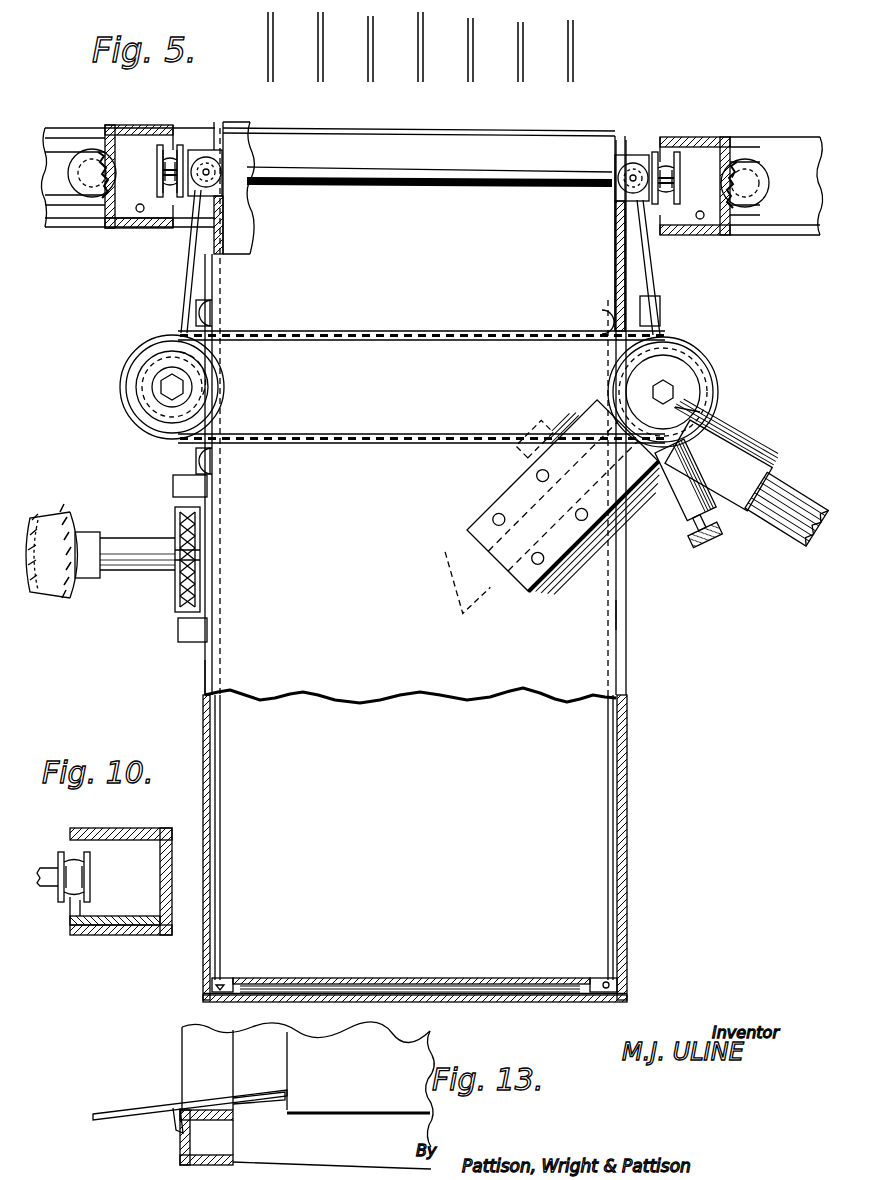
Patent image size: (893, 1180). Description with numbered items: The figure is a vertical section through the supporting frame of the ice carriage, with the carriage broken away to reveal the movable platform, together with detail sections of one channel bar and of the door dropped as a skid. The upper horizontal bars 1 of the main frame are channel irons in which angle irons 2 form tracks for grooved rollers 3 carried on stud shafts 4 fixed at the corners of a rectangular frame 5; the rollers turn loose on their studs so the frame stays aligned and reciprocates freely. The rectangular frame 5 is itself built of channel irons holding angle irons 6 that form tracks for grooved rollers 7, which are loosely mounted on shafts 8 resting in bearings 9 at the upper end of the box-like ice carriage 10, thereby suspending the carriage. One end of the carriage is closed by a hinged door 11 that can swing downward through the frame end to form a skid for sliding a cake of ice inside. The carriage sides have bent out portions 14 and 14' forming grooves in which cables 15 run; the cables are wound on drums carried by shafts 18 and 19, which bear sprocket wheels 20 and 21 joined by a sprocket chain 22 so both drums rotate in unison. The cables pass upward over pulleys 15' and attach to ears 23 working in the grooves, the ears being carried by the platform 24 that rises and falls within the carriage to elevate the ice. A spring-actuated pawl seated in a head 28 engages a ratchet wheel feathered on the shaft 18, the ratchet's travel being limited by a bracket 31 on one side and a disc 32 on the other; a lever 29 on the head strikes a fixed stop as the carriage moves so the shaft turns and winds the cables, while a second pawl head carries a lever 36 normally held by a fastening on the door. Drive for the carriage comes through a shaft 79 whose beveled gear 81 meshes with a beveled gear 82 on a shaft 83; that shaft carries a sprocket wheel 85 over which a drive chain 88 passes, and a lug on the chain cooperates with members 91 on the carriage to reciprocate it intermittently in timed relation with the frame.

In FIG. 5, the upper horizontal bars 1 is at (56, 232).
In FIG. 10, the upper horizontal bars 1 is at (115, 934).
In FIG. 13, the upper horizontal bars 1 is at (180, 1152).
In FIG. 5, the angle irons 2 is at (75, 207).
In FIG. 10, the angle irons 2 is at (82, 912).
In FIG. 5, the grooved rollers 3 is at (70, 172).
In FIG. 10, the grooved rollers 3 is at (82, 877).
In FIG. 5, the stud shafts 4 is at (98, 150).
In FIG. 10, the stud shafts 4 is at (50, 866).
In FIG. 5, the rectangular frame 5 is at (115, 128).
In FIG. 5, the angle irons 6 is at (135, 225).
In FIG. 5, the grooved rollers 7 is at (157, 172).
In FIG. 5, the shafts 8 is at (396, 188).
In FIG. 5, the bearings 9 is at (207, 160).
In FIG. 5, the ice carriage 10 is at (410, 735).
In FIG. 13, the ice carriage 10 is at (308, 1095).
In FIG. 13, the hinged door 11 is at (130, 1110).
In FIG. 5, the bent out portions 14 is at (165, 675).
In FIG. 5, the tank wall 14' is at (654, 614).
In FIG. 5, the cables 15 is at (453, 564).
In FIG. 5, the pulleys 15' is at (260, 188).
In FIG. 5, the shaft 18 is at (676, 386).
In FIG. 5, the shaft 19 is at (168, 386).
In FIG. 5, the sprocket wheel 20 is at (672, 348).
In FIG. 5, the sprocket wheel 21 is at (160, 432).
In FIG. 5, the sprocket chain 22 is at (400, 330).
In FIG. 5, the ears 23 is at (226, 978).
In FIG. 5, the platform 24 is at (396, 984).
In FIG. 5, the head 28 is at (752, 462).
In FIG. 5, the lever 29 is at (782, 482).
In FIG. 5, the bracket 31 is at (515, 502).
In FIG. 5, the disc 32 is at (700, 412).
In FIG. 5, the lever 36 is at (502, 517).
In FIG. 5, the shaft 79 is at (55, 590).
In FIG. 5, the beveled gear 81 is at (42, 512).
In FIG. 5, the beveled gear 82 is at (85, 530).
In FIG. 5, the shaft 83 is at (135, 568).
In FIG. 5, the sprocket wheel 85 is at (196, 520).
In FIG. 5, the drive chain 88 is at (200, 556).
In FIG. 5, the members 91 is at (200, 484).